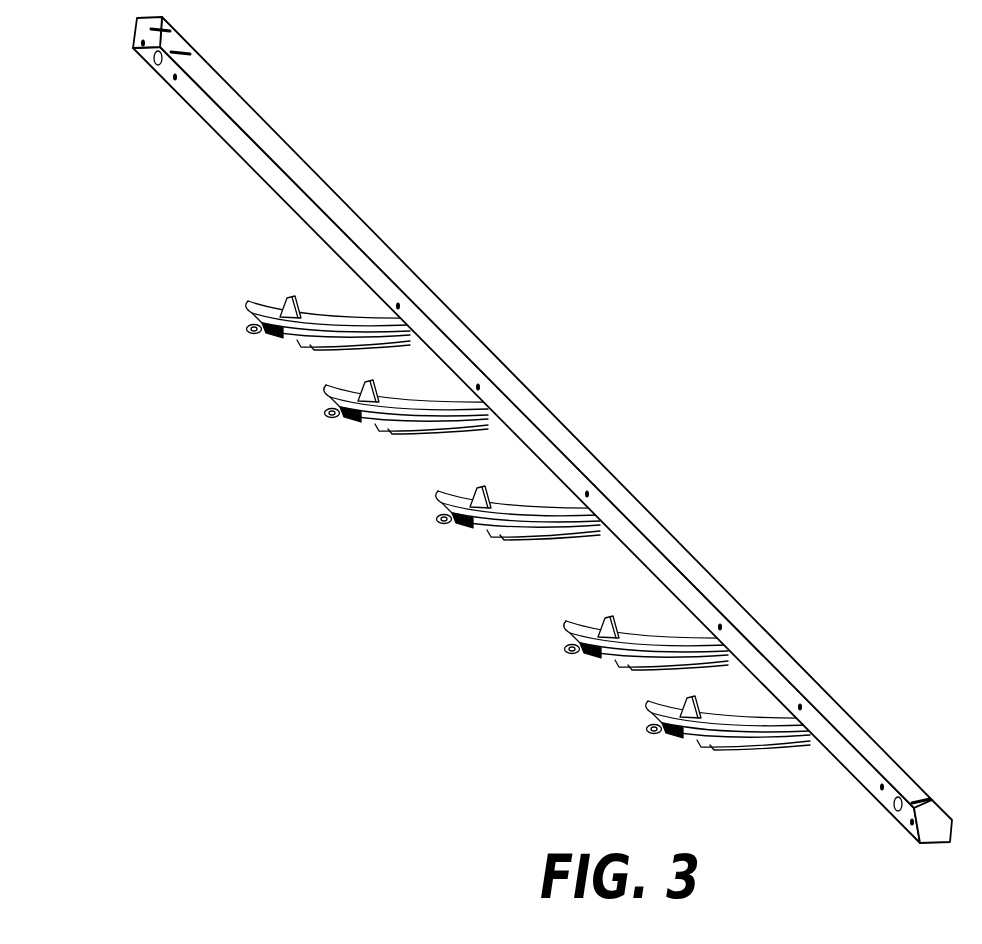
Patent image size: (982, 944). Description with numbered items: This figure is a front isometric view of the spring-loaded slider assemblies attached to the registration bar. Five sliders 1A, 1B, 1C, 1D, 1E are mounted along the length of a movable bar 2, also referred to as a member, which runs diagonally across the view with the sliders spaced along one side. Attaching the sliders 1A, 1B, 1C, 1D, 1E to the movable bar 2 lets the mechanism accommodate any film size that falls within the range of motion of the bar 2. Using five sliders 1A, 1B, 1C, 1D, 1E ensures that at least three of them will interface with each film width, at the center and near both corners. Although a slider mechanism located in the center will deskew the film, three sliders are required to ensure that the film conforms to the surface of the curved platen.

The movable bar 2 is at (314, 173).
The slider 1A is at (452, 528).
The slider 1B is at (340, 422).
The slider 1C is at (580, 658).
The slider 1D is at (262, 338).
The slider 1E is at (662, 738).